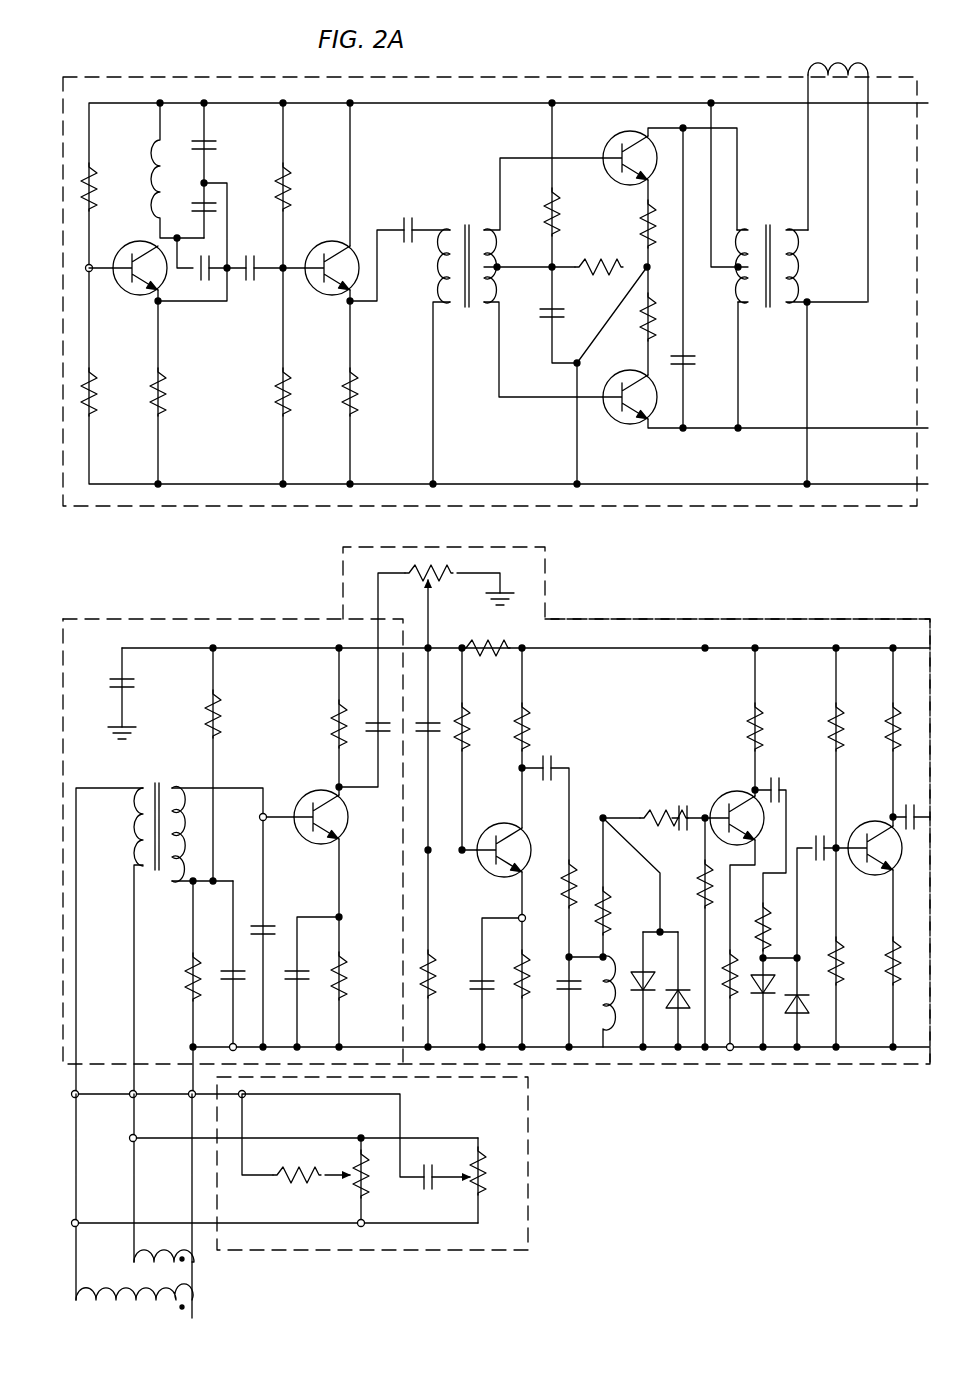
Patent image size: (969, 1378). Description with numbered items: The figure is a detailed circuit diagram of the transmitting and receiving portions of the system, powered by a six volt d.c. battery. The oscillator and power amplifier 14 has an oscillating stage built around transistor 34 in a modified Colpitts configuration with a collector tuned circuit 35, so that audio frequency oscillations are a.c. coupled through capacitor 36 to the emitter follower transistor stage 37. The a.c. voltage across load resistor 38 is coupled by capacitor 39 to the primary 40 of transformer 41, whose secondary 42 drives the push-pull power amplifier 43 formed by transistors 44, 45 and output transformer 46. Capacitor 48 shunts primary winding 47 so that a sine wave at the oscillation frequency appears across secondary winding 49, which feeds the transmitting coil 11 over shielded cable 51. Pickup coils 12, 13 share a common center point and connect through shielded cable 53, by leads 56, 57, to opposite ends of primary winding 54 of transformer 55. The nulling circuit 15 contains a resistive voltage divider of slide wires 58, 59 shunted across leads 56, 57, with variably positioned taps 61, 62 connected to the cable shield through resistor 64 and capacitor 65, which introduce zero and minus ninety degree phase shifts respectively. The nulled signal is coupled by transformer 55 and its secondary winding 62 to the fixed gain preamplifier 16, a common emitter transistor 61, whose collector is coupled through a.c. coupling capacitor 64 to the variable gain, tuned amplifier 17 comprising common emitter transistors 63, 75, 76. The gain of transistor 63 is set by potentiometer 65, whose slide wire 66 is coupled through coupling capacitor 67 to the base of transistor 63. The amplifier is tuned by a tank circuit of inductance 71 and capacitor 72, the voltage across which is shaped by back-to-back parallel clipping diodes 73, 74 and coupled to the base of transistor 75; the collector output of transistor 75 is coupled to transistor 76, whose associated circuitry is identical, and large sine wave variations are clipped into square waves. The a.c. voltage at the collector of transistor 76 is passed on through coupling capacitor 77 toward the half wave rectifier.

The transmitting coil 11 is at (815, 55).
The pickup coil 12 is at (190, 1318).
The pickup coil 13 is at (190, 1278).
The oscillator and power amplifier 14 is at (196, 77).
The nulling circuit 15 is at (528, 1140).
The fixed gain preamplifier 16 is at (270, 618).
The variable gain, tuned amplifier 17 is at (630, 617).
The transistor 34 is at (126, 290).
The collector tuned circuit 35 is at (214, 170).
The capacitor 36 is at (262, 275).
The emitter follower transistor stage 37 is at (322, 244).
The load resistor 38 is at (366, 392).
The capacitor 39 is at (404, 222).
The primary 40 is at (456, 305).
The transformer 41 is at (482, 266).
The secondary 42 is at (494, 250).
The push-pull power amplifier 43 is at (634, 249).
The transistor 44 is at (603, 143).
The transistor 45 is at (625, 425).
The output transformer 46 is at (780, 301).
The primary winding 47 is at (740, 285).
The capacitor 48 is at (690, 358).
The transformer secondary winding 49 is at (796, 262).
The shielded cable 51 is at (808, 153).
The shielded cable 53 is at (62, 1112).
The primary winding 54 is at (287, 966).
The transformer 55 is at (160, 885).
The lead 56 is at (77, 1010).
The lead 57 is at (135, 985).
The slide wire 58 is at (366, 1182).
The slide wire 59 is at (484, 1176).
The tap / common emitter transistor 61 is at (318, 792).
The tap / secondary winding 62 is at (176, 808).
The common emitter transistor 63 is at (488, 868).
The resistor / a.c. coupling capacitor 64 is at (385, 738).
The capacitor / potentiometer 65 is at (455, 573).
The slide wire 66 is at (432, 585).
The coupling capacitor 67 is at (424, 715).
The inductance 71 is at (620, 1040).
The capacitor 72 is at (564, 990).
The clipping diode 73 is at (672, 1010).
The clipping diode 74 is at (640, 978).
The transistor 75 is at (735, 792).
The transistor 76 is at (868, 823).
The coupling capacitor 77 is at (912, 835).